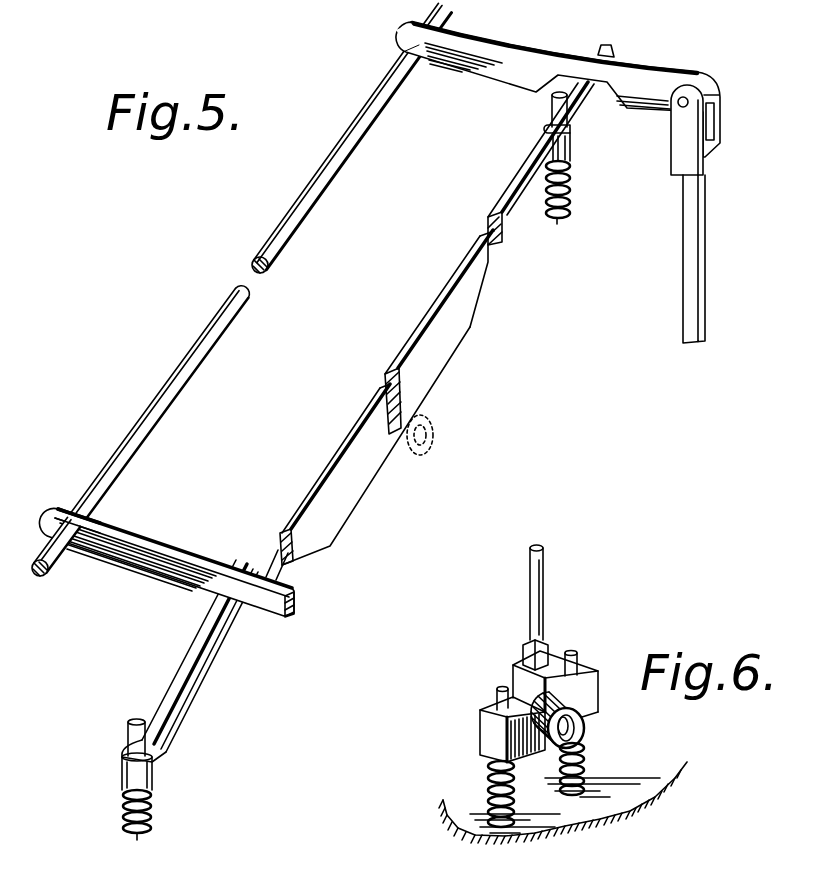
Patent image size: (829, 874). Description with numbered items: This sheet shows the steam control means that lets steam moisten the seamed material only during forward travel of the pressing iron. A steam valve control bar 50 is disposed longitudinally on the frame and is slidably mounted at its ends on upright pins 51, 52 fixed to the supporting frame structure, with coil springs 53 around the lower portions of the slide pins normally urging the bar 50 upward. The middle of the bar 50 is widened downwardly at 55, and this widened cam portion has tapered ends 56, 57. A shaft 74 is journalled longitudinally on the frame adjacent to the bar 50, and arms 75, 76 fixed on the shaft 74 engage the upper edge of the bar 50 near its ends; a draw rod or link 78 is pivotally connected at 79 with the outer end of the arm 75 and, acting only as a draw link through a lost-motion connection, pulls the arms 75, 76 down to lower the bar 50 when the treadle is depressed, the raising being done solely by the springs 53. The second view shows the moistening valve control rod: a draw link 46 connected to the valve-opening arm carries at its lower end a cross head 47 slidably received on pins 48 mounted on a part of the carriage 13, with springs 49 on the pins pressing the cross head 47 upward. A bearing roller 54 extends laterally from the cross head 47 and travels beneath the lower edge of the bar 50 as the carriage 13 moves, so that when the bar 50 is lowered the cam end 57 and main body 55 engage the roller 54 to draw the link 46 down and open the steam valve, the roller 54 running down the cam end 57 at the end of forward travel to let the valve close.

In FIG. 5, the shaft 74 is at (298, 206).
In FIG. 5, the arm 75 is at (453, 66).
In FIG. 5, the arm 76 is at (170, 583).
In FIG. 5, the draw rod or link 78 is at (697, 257).
In FIG. 5, the pivotal connection 79 is at (717, 110).
In FIG. 5, the steam valve control bar 50 is at (430, 318).
In FIG. 5, the upright pin 51 is at (128, 736).
In FIG. 5, the upright pin 52 is at (552, 112).
In FIG. 5, the coil spring 53 is at (153, 811).
In FIG. 5, the bearing roller 54 is at (433, 436).
In FIG. 6, the bearing roller 54 is at (585, 723).
In FIG. 5, the widened portion 55 is at (452, 374).
In FIG. 5, the tapered end 56 is at (318, 558).
In FIG. 5, the tapered end 57 is at (477, 298).
In FIG. 6, the draw link 46 is at (537, 583).
In FIG. 6, the cross head 47 is at (582, 662).
In FIG. 6, the pin 48 is at (497, 692).
In FIG. 6, the spring 49 is at (487, 777).
In FIG. 6, the carriage 13 is at (676, 740).